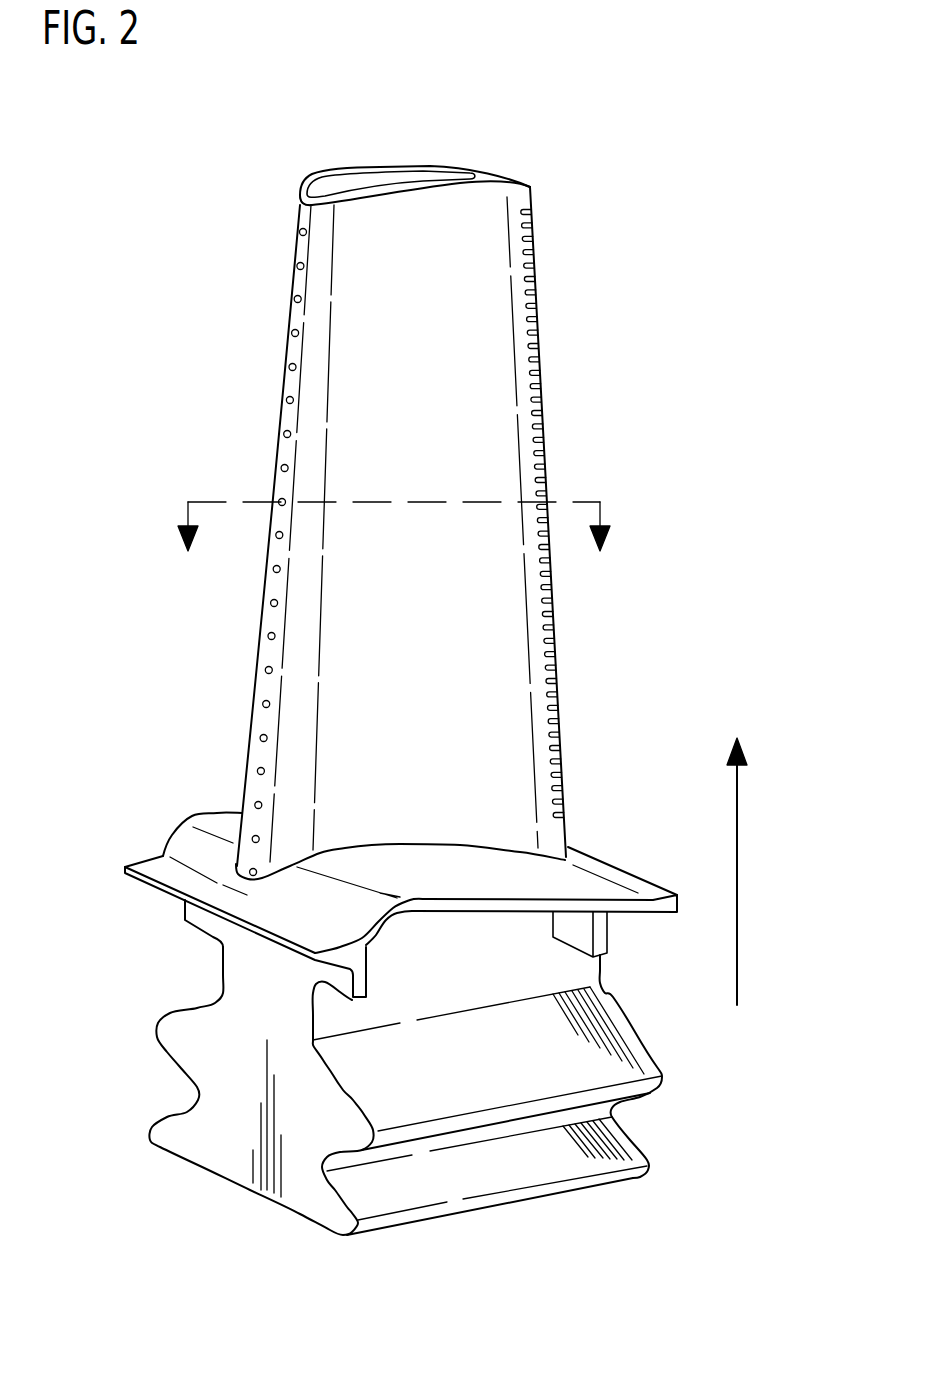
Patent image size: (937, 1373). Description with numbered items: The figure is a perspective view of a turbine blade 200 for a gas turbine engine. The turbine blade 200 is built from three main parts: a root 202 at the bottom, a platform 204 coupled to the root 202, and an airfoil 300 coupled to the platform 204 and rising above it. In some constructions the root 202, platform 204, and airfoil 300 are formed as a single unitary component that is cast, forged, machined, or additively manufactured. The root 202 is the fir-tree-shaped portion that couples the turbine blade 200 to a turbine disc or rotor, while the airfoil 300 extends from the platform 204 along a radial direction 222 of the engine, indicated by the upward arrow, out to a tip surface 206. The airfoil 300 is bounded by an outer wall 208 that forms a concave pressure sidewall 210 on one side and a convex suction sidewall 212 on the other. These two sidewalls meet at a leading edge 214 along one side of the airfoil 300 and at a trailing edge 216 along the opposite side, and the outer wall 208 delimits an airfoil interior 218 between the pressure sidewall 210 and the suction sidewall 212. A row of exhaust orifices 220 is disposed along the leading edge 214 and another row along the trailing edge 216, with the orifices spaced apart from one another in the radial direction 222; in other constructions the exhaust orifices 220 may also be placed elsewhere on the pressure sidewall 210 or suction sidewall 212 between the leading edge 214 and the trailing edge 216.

The turbine blade 200 is at (660, 115).
The root 202 is at (227, 1050).
The platform 204 is at (193, 848).
The tip surface 206 is at (483, 180).
The outer wall 208 is at (420, 320).
The pressure sidewall 210 is at (427, 185).
The suction sidewall 212 is at (317, 175).
The leading edge 214 is at (300, 202).
The trailing edge 216 is at (531, 187).
The airfoil interior 218 is at (335, 160).
The exhaust orifices 220 is at (287, 434).
The radial direction 222 is at (737, 880).
The airfoil 300 is at (438, 625).